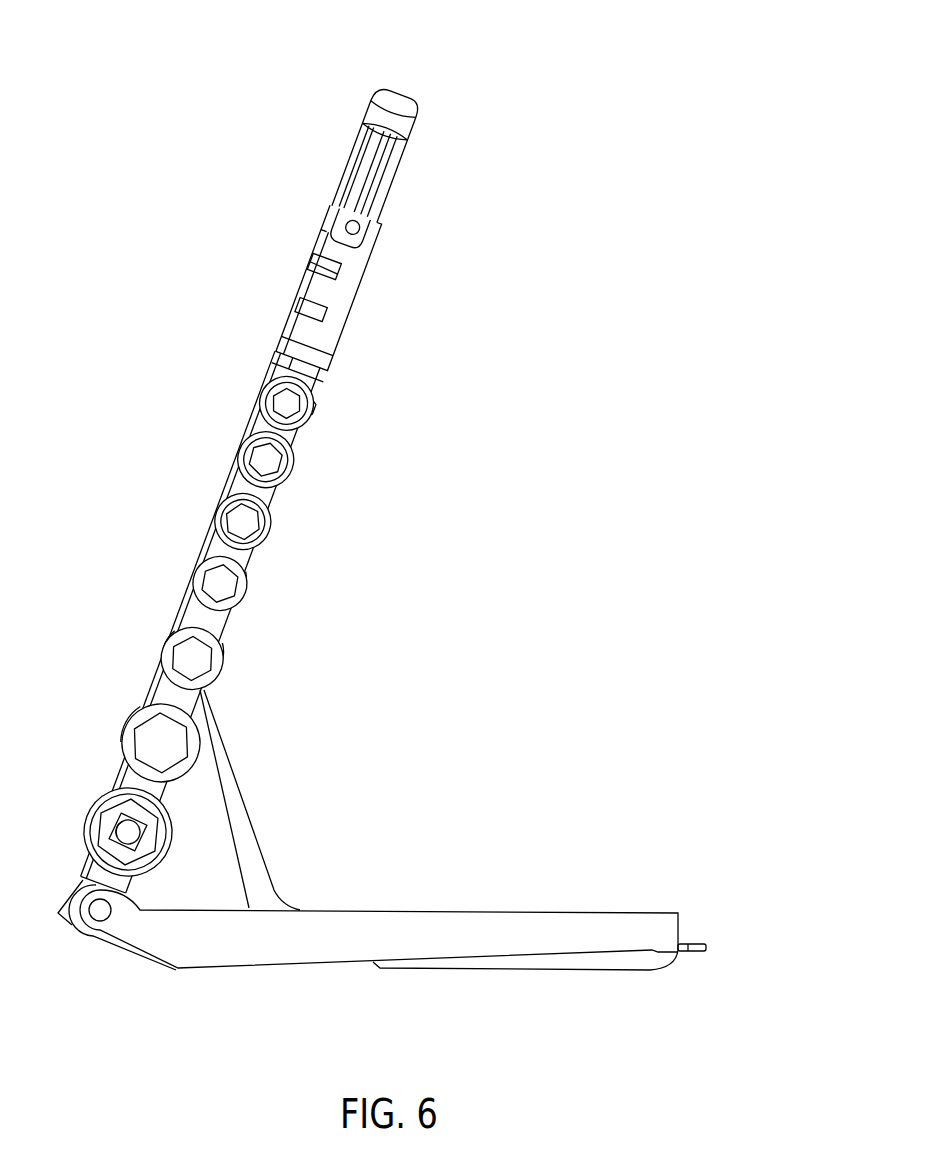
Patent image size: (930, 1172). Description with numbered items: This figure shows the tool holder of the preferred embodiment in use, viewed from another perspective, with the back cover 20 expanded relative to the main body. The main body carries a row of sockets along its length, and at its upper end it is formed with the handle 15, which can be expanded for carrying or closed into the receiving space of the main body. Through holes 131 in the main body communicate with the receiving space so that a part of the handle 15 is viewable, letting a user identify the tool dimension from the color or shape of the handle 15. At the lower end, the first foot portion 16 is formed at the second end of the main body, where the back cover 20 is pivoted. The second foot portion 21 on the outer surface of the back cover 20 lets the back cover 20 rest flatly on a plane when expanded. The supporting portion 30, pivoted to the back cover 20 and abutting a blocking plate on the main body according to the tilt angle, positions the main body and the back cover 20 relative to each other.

The handle 15 is at (395, 122).
The through holes 131 is at (318, 308).
The supporting portion 30 is at (235, 820).
The back cover 20 is at (277, 942).
The second foot portion 21 is at (640, 958).
The first foot portion 16 is at (68, 918).